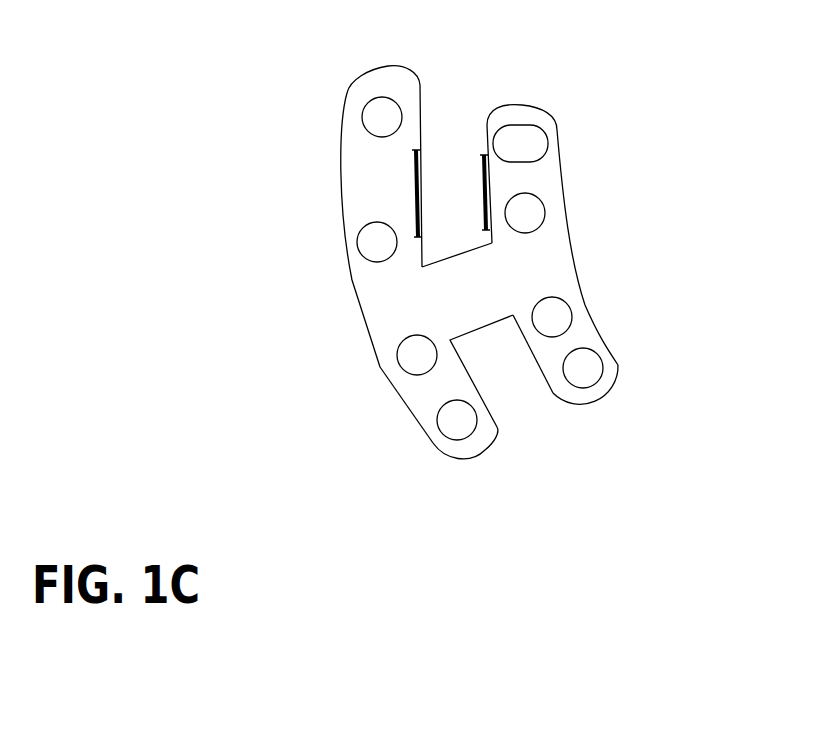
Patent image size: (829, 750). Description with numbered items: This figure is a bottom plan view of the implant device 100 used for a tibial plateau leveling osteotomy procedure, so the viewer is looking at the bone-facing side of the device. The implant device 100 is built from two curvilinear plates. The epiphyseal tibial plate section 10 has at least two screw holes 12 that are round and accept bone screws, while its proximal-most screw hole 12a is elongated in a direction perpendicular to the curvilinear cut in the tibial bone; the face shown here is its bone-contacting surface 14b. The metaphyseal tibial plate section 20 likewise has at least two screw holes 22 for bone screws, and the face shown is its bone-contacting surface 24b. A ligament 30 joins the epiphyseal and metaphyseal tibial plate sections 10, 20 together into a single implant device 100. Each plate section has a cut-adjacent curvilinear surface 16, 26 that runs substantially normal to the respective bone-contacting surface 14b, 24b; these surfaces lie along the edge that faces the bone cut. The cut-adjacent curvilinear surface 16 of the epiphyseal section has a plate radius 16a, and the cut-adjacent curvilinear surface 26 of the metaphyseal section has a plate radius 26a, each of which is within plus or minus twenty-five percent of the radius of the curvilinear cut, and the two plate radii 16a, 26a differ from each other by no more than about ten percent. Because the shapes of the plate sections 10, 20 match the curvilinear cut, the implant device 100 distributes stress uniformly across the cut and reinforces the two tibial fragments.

The implant device 100 is at (438, 274).
The epiphyseal tibial plate section 10 is at (592, 337).
The screw hole 12 is at (540, 198).
The elongated screw hole 12a is at (540, 123).
The bone-contacting surface 14b is at (562, 267).
The cut-adjacent curvilinear surface 16 is at (487, 379).
The plate radius 16a is at (486, 190).
The metaphyseal tibial plate section 20 is at (482, 432).
The screw hole 22 is at (368, 131).
The bone-contacting surface 24b is at (428, 398).
The cut-adjacent curvilinear surface 26 is at (522, 373).
The plate radius 26a is at (418, 193).
The ligament 30 is at (458, 297).